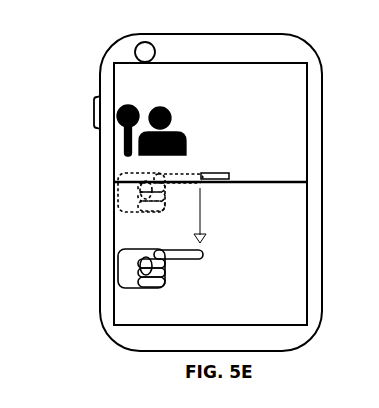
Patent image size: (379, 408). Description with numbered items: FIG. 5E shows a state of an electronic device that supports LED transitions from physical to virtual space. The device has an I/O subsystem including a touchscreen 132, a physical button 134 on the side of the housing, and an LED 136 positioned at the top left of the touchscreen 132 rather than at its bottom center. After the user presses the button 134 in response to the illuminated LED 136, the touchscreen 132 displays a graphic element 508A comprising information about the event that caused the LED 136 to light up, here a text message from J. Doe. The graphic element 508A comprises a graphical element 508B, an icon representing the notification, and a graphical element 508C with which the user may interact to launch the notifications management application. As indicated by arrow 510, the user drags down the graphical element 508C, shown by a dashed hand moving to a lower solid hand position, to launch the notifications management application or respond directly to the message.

The touchscreen 132 is at (322, 205).
The button 134 is at (96, 107).
The LED 136 is at (156, 51).
The graphic element 508A is at (234, 87).
The graphical element 508B is at (150, 93).
The graphical element 508C is at (229, 173).
The arrow 510 is at (203, 227).